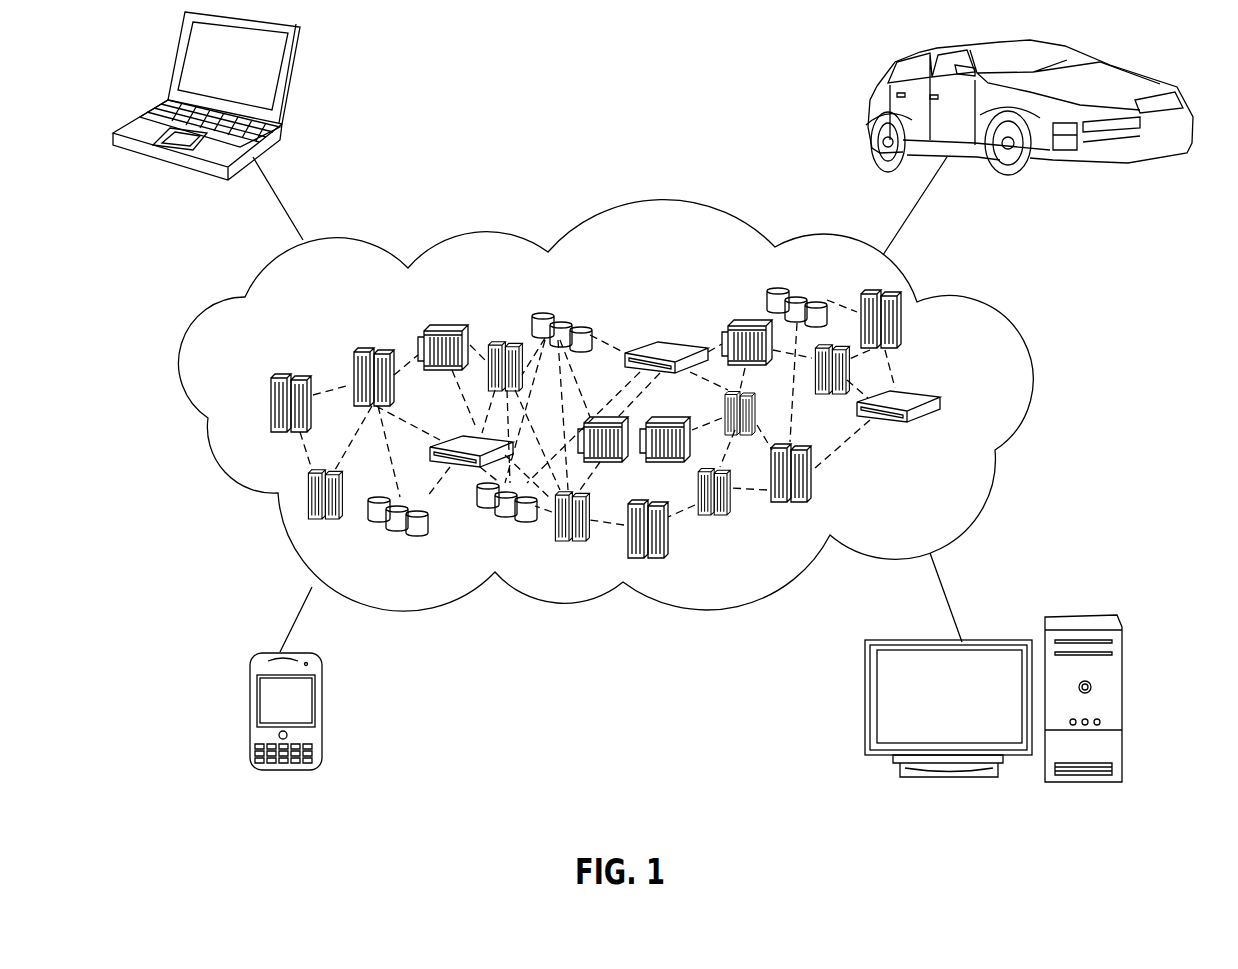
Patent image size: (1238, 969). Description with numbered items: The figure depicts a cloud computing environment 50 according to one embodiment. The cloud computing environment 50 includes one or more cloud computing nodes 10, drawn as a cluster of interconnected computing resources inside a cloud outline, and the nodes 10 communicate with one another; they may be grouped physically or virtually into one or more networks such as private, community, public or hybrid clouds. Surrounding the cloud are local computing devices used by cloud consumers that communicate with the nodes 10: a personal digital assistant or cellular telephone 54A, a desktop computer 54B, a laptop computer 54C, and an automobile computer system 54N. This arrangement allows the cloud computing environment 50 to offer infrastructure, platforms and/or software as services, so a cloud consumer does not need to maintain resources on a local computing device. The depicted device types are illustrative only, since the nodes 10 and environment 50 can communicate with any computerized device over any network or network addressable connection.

The cloud computing nodes 10 is at (985, 402).
The cloud computing environment 50 is at (1005, 315).
The personal digital assistant or cellular telephone 54A is at (250, 717).
The desktop computer 54B is at (1088, 613).
The laptop computer 54C is at (292, 80).
The automobile computer system 54N is at (875, 90).